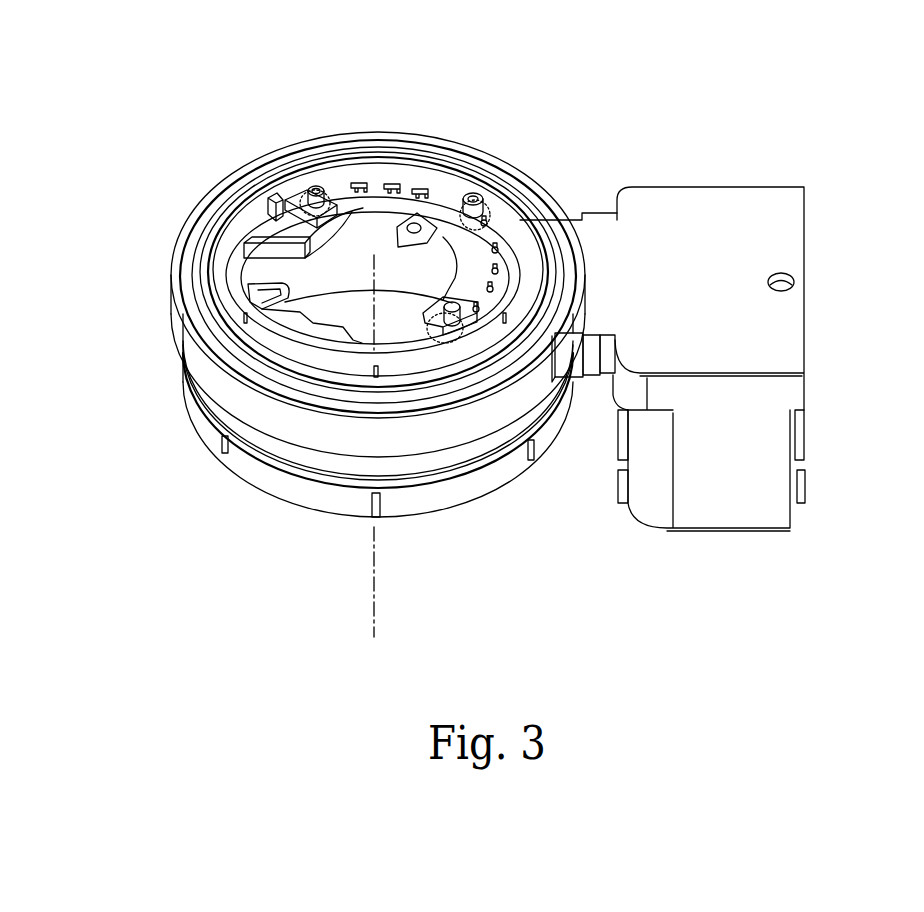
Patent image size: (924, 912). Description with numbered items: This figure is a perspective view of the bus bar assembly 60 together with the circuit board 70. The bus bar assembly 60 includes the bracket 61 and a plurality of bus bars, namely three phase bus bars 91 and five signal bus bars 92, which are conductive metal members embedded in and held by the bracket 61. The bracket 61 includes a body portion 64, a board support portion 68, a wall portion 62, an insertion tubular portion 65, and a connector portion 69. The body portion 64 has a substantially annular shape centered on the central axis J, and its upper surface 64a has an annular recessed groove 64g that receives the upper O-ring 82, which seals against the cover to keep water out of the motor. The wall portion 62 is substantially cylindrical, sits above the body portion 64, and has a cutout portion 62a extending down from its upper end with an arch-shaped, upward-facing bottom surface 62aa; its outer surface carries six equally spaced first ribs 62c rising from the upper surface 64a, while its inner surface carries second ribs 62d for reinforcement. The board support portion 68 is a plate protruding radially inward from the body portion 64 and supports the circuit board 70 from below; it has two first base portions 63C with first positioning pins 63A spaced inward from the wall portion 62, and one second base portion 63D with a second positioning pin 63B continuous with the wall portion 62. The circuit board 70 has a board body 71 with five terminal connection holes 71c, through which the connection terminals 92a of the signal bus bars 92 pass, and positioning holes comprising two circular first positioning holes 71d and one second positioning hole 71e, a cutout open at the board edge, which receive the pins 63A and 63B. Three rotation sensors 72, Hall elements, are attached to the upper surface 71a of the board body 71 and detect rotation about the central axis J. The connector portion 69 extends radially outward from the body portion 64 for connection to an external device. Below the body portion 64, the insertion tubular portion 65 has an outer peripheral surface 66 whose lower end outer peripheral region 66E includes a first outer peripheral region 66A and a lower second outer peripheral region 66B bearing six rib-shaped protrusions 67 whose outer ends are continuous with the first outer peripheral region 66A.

The bus bar assembly 60 is at (593, 143).
The bracket 61 is at (521, 169).
The wall portion 62 is at (293, 470).
The cutout portion 62a is at (538, 300).
The bottom surface 62aa is at (513, 282).
The first ribs 62c is at (222, 445).
The second ribs 62d is at (277, 237).
The first positioning pins 63A is at (317, 188).
The second positioning pin 63B is at (480, 195).
The first base portions 63C is at (270, 192).
The second base portion 63D is at (506, 206).
The body portion 64 is at (303, 492).
The upper surface 64a is at (210, 338).
The recessed groove 64g is at (202, 313).
The insertion tubular portion 65 is at (263, 490).
The outer peripheral surface 66 is at (472, 488).
The first outer peripheral region 66A is at (282, 478).
The second outer peripheral region 66B is at (303, 500).
The lower end outer peripheral region 66E is at (186, 597).
The protrusions 67 is at (372, 503).
The board support portion 68 is at (270, 215).
The connector portion 69 is at (770, 187).
The circuit board 70 is at (440, 222).
The board body 71 is at (456, 212).
The upper surface 71a is at (475, 192).
The terminal connection holes 71c is at (500, 270).
The first positioning holes 71d is at (275, 232).
The second positioning hole 71e is at (498, 247).
The rotation sensors 72 is at (420, 189).
The upper O-ring 82 is at (197, 263).
The phase bus bars 91 is at (397, 238).
The signal bus bars 92 is at (500, 250).
The connection terminal 92a is at (505, 238).
The central axis J is at (372, 592).